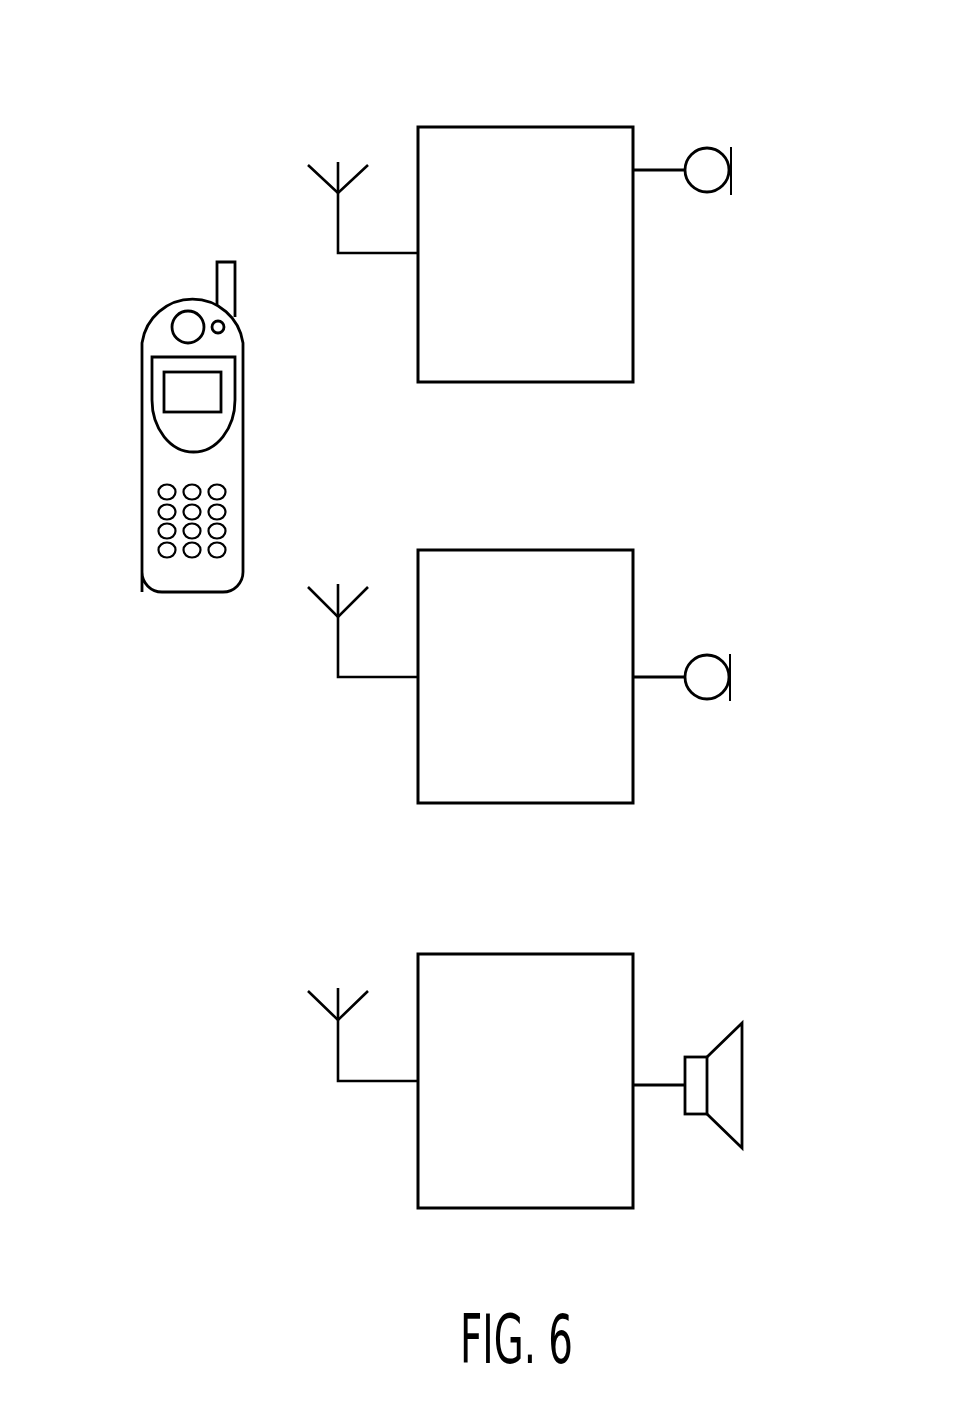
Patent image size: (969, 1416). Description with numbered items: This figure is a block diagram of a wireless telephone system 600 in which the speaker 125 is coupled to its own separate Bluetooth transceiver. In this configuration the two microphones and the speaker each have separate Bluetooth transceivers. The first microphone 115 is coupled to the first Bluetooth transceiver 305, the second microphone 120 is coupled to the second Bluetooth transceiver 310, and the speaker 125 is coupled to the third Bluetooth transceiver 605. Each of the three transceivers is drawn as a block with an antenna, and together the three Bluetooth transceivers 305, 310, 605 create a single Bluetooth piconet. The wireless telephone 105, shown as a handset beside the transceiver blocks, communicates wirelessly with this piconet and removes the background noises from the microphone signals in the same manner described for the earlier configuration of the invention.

The wireless telephone system 600 is at (112, 113).
The wireless telephone 105 is at (243, 407).
The first Bluetooth transceiver 305 is at (593, 127).
The first microphone 115 is at (732, 168).
The second Bluetooth transceiver 310 is at (593, 550).
The second microphone 120 is at (731, 673).
The third Bluetooth transceiver 605 is at (593, 954).
The speaker 125 is at (742, 1085).